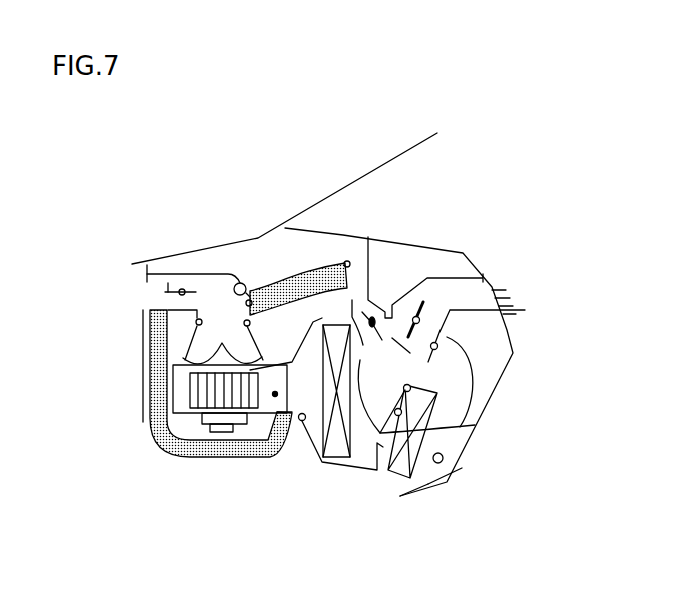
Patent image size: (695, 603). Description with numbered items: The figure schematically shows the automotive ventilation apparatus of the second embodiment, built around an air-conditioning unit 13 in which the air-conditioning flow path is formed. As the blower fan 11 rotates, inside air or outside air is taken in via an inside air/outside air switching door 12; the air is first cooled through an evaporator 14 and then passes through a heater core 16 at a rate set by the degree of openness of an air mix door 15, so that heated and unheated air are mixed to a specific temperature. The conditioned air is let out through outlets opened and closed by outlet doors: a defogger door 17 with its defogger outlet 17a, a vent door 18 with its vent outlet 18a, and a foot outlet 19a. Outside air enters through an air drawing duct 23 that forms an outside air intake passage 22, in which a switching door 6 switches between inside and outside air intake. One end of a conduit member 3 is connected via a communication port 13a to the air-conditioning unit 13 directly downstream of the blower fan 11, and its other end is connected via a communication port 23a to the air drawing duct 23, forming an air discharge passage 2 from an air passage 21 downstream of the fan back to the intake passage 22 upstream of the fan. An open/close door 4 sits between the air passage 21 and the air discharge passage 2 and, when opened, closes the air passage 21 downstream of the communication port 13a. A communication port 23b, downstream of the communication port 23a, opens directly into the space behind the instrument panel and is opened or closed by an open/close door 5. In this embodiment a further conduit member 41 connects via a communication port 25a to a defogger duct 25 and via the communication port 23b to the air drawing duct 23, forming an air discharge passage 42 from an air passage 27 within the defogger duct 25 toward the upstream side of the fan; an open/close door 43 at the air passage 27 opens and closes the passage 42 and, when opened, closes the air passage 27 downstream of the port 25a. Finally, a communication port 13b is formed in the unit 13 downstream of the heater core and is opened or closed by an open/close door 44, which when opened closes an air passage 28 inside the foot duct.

The air discharge passage 2 is at (237, 453).
The conduit member 3 is at (177, 448).
The open/close door 4 is at (301, 423).
The open/close door 5 is at (262, 287).
The switching door 6 is at (168, 292).
The blower fan 11 is at (192, 390).
The inside air/outside air switching door 12 is at (187, 345).
The air-conditioning unit 13 is at (287, 366).
The communication port 13a is at (318, 463).
The communication port 13b is at (444, 458).
The evaporator 14 is at (343, 462).
The air mix door 15 is at (483, 420).
The heater core 16 is at (387, 482).
The defogger door 17 is at (375, 280).
The defogger outlet 17a is at (357, 237).
The vent door 18 is at (443, 328).
The vent outlet 18a is at (492, 287).
The foot outlet 19a is at (413, 490).
The air passage 21 is at (275, 394).
The outside air intake passage 22 is at (192, 280).
The air drawing duct 23 is at (205, 273).
The communication port 23a is at (158, 312).
The communication port 23b is at (242, 283).
The defogger duct 25 is at (375, 270).
The communication port 25a is at (251, 325).
The air passage 27 is at (378, 248).
The air passage 28 is at (462, 468).
The conduit member 41 is at (308, 268).
The air discharge passage 42 is at (347, 262).
The open/close door 43 is at (347, 272).
The open/close door 44 is at (423, 473).